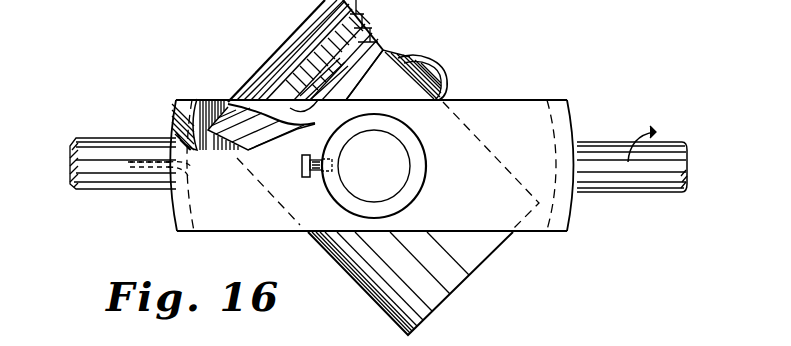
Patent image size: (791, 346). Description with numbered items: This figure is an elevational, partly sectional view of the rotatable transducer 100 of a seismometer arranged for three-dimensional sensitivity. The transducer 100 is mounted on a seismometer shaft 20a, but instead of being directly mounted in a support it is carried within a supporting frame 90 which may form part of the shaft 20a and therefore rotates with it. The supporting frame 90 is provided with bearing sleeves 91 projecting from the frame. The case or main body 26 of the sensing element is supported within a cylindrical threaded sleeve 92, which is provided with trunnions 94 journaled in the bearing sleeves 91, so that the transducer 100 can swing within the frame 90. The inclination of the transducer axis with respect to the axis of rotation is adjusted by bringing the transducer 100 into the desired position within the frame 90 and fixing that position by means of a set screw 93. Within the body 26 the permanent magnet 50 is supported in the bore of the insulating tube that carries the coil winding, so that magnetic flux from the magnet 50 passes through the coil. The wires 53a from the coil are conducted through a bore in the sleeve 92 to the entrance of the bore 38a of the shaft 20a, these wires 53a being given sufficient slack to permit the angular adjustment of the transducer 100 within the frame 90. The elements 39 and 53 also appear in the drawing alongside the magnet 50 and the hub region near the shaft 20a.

The supporting frame 90 is at (530, 140).
The seismometer shaft 20a is at (672, 210).
The bore of shaft 38a is at (142, 170).
The bearing sleeves 91 is at (420, 163).
The trunnions 94 is at (374, 166).
The set screw 93 is at (302, 167).
The cylindrical threaded sleeve 92 is at (471, 262).
The transducer 100 is at (318, 62).
The main body 26 is at (355, 47).
The retainer 39 is at (340, 92).
The permanent magnet 50 is at (292, 114).
The wires 53a is at (447, 79).
The hub 53 is at (206, 100).